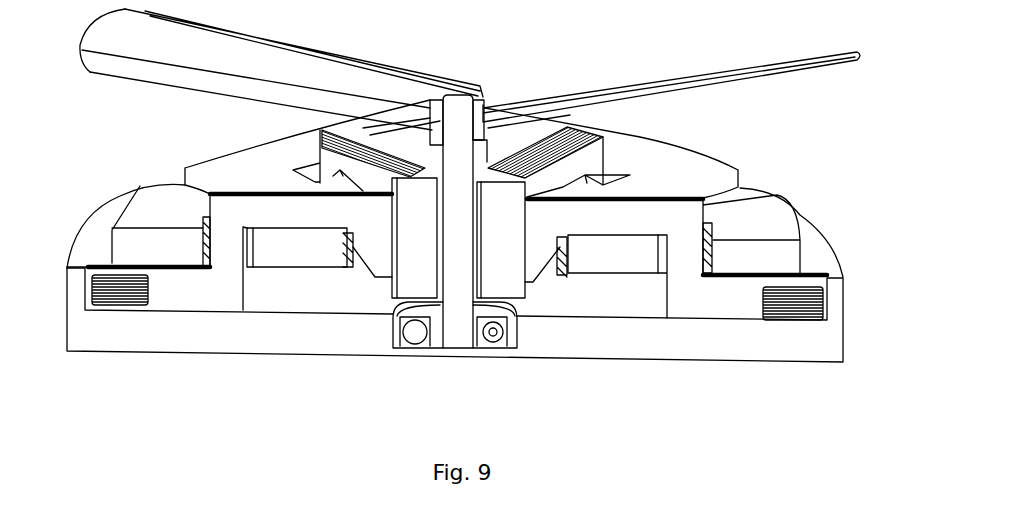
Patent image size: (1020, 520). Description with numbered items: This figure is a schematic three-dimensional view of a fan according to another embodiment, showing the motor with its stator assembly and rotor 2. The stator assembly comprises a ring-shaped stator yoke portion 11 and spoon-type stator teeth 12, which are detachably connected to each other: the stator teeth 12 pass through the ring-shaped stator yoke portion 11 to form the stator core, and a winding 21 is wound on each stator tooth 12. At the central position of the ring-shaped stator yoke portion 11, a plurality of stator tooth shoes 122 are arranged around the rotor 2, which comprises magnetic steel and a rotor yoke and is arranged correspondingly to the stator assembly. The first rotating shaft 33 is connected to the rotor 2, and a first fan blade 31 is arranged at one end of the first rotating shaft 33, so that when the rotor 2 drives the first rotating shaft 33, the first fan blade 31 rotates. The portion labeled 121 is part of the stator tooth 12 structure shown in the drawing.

The rotor 2 is at (488, 183).
The stator yoke portion 11 is at (115, 292).
The stator tooth 12 is at (455, 305).
The base housing 121 is at (185, 292).
The stator tooth shoe 122 is at (365, 243).
The winding 21 is at (140, 210).
The first fan blade 31 is at (296, 73).
The first rotating shaft 33 is at (450, 135).